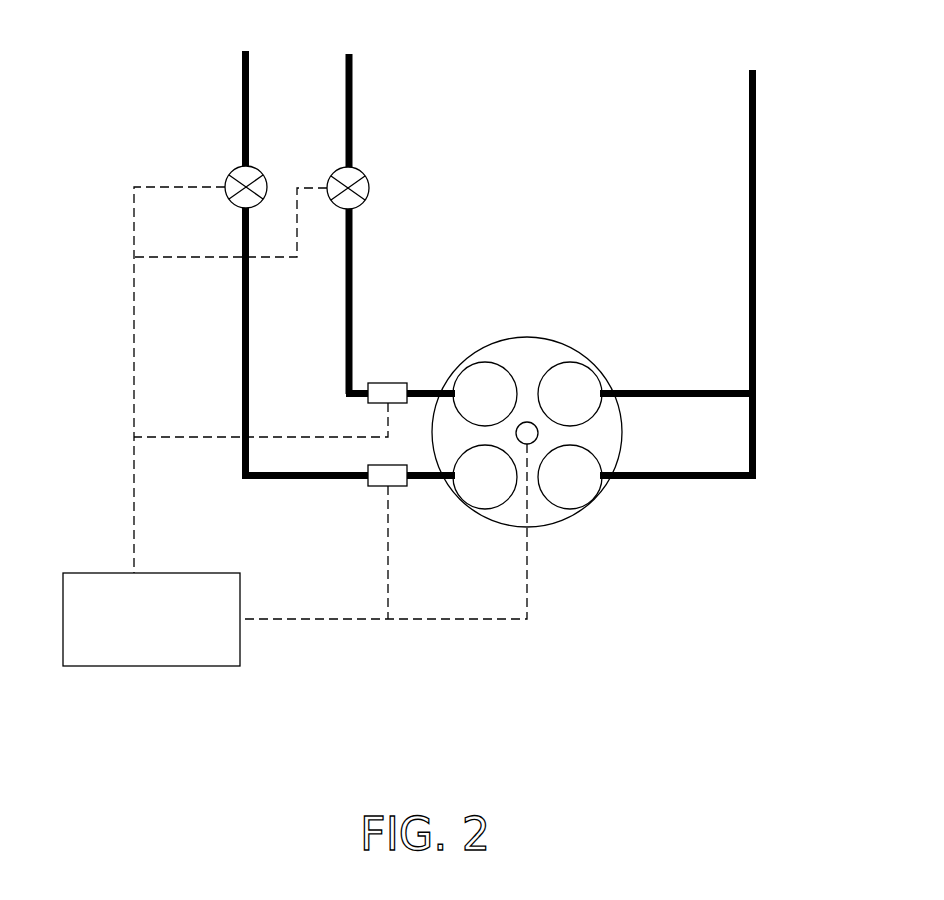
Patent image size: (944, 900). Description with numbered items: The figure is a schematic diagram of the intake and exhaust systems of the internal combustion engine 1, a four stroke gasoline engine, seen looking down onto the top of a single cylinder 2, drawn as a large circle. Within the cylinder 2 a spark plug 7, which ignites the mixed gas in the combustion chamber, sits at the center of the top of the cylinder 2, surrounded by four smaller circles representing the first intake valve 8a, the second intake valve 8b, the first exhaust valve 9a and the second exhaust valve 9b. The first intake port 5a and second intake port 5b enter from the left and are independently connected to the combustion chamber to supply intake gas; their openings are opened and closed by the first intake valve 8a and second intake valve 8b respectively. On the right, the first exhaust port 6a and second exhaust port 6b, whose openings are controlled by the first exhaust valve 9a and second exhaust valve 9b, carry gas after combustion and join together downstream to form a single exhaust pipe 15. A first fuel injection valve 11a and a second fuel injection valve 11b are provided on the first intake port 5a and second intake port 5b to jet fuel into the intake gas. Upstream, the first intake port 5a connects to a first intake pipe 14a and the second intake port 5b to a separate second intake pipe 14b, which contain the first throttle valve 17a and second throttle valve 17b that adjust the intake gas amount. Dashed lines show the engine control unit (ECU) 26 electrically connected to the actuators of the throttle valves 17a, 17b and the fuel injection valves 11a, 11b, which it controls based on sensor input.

The internal combustion engine 1 is at (555, 128).
The cylinder 2 is at (547, 527).
The first intake port 5a is at (423, 388).
The second intake port 5b is at (425, 480).
The first exhaust port 6a is at (674, 391).
The second exhaust port 6b is at (688, 479).
The spark plug 7 is at (529, 421).
The first intake valve 8a is at (475, 362).
The second intake valve 8b is at (480, 503).
The first exhaust valve 9a is at (595, 360).
The second exhaust valve 9b is at (580, 500).
The first fuel injection valve 11a is at (382, 381).
The second fuel injection valve 11b is at (364, 498).
The first intake pipe 14a is at (356, 97).
The second intake pipe 14b is at (238, 93).
The exhaust pipe 15 is at (758, 167).
The first throttle valve 17a is at (368, 178).
The second throttle valve 17b is at (230, 173).
The engine control unit (ECU) 26 is at (173, 666).